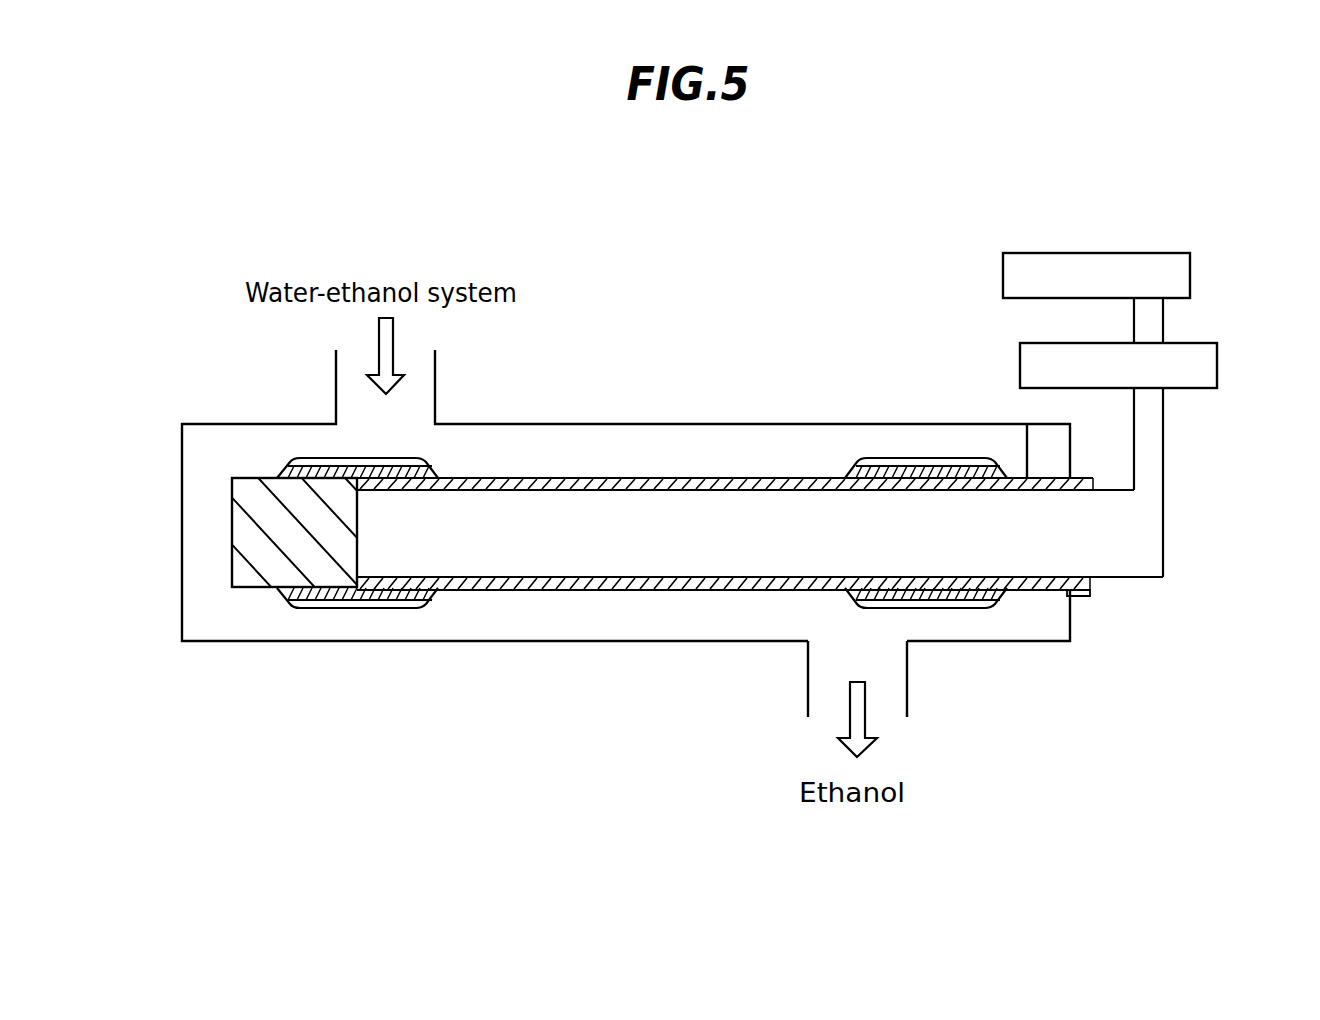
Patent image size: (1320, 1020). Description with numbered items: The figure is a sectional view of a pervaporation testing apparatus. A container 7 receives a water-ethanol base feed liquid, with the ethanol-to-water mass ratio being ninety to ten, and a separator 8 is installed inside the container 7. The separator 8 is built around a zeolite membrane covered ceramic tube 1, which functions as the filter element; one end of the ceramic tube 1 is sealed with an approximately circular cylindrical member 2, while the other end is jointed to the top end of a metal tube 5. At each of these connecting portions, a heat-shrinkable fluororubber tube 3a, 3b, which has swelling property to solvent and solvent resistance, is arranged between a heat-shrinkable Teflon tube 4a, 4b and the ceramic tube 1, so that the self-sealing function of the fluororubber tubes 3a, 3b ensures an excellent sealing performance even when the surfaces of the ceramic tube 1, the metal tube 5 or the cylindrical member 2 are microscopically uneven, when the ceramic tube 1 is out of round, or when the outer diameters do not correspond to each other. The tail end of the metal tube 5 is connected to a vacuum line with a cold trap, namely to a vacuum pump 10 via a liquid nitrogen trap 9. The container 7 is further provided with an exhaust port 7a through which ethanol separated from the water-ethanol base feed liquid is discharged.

The zeolite membrane covered ceramic tube 1 is at (757, 478).
The approximately circular cylindrical member 2 is at (252, 590).
The heat-shrinkable fluororubber tube 3a is at (415, 468).
The heat-shrinkable fluororubber tube 3b is at (968, 468).
The heat-shrinkable Teflon tube 4a is at (306, 458).
The heat-shrinkable Teflon tube 4b is at (905, 470).
The metal tube 5 is at (1096, 596).
The container 7 is at (607, 424).
The exhaust port 7a is at (808, 678).
The separator 8 is at (681, 462).
The liquid nitrogen trap 9 is at (1207, 343).
The vacuum pump 10 is at (1122, 253).